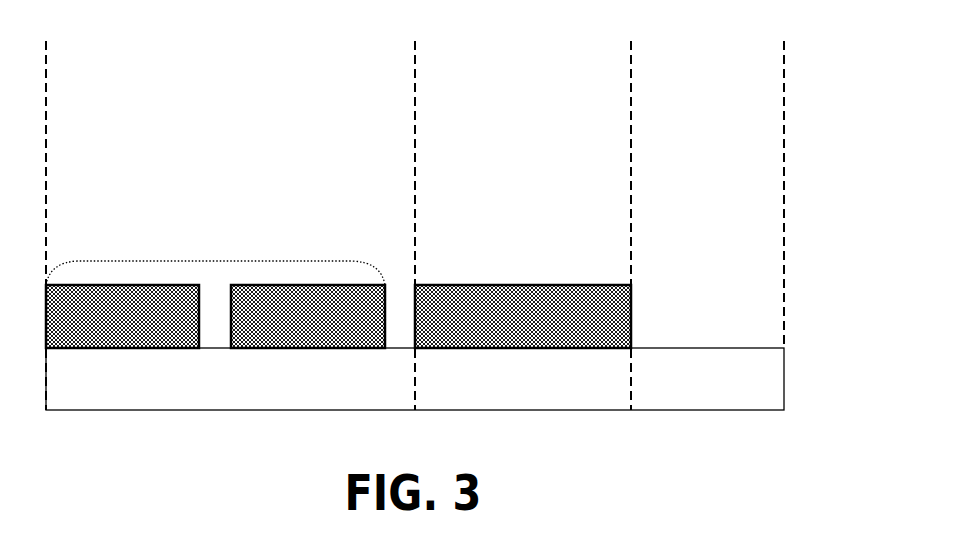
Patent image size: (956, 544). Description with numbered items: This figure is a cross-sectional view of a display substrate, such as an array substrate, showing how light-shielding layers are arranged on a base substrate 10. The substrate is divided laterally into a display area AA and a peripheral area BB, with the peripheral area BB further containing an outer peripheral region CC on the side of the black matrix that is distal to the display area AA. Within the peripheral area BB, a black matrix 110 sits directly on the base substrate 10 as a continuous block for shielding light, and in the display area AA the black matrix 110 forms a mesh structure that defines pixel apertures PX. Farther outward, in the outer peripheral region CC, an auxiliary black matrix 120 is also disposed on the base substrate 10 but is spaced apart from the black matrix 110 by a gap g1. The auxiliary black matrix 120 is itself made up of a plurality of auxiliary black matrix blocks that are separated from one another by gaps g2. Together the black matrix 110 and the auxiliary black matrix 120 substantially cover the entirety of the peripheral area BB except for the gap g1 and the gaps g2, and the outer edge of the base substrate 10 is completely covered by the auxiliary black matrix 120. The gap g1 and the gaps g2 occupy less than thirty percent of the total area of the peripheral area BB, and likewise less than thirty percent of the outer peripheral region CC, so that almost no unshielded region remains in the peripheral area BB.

The base substrate 10 is at (784, 378).
The black matrix 110 is at (522, 315).
The auxiliary black matrix 120 is at (215, 262).
The gap g1 is at (399, 303).
The gaps g2 is at (215, 303).
The pixel apertures PX is at (698, 317).
The display area AA is at (644, 41).
The peripheral area BB is at (618, 41).
The outer peripheral region CC is at (59, 101).